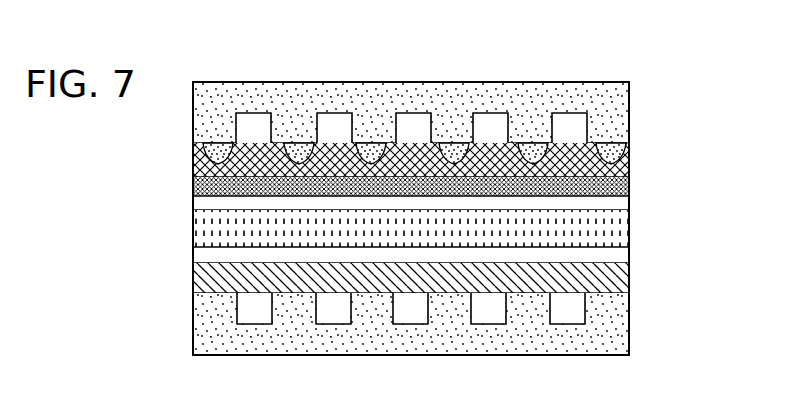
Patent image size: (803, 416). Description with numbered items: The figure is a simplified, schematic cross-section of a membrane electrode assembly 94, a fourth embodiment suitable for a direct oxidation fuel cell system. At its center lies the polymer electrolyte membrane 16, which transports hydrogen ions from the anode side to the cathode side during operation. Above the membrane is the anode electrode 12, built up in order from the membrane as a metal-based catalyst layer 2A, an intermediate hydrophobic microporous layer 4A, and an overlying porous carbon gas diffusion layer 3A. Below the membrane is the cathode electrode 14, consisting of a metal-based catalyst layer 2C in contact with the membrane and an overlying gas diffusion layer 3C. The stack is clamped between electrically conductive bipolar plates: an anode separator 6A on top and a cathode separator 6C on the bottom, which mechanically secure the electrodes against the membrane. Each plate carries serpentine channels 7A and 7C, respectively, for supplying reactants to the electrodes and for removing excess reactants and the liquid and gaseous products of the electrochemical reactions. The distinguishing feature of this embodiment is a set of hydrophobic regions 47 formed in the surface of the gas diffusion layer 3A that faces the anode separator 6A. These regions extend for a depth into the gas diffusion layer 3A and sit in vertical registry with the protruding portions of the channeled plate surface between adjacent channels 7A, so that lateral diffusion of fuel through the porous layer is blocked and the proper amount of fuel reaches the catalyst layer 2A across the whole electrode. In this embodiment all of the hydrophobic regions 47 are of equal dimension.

The membrane electrode assembly 94 is at (247, 80).
The anode separator 6A is at (637, 114).
The serpentine channels 7A is at (570, 123).
The gas diffusion layer 3A is at (637, 162).
The hydrophobic regions 47 is at (529, 140).
The hydrophobic microporous layer 4A is at (637, 192).
The metal-based catalyst layer 2A is at (637, 207).
The polymer electrolyte membrane 16 is at (636, 236).
The metal-based catalyst layer 2C is at (636, 258).
The gas diffusion layer 3C is at (636, 287).
The cathode separator 6C is at (636, 330).
The serpentine channels 7C is at (565, 318).
The anode electrode 12 is at (726, 105).
The cathode electrode 14 is at (726, 280).